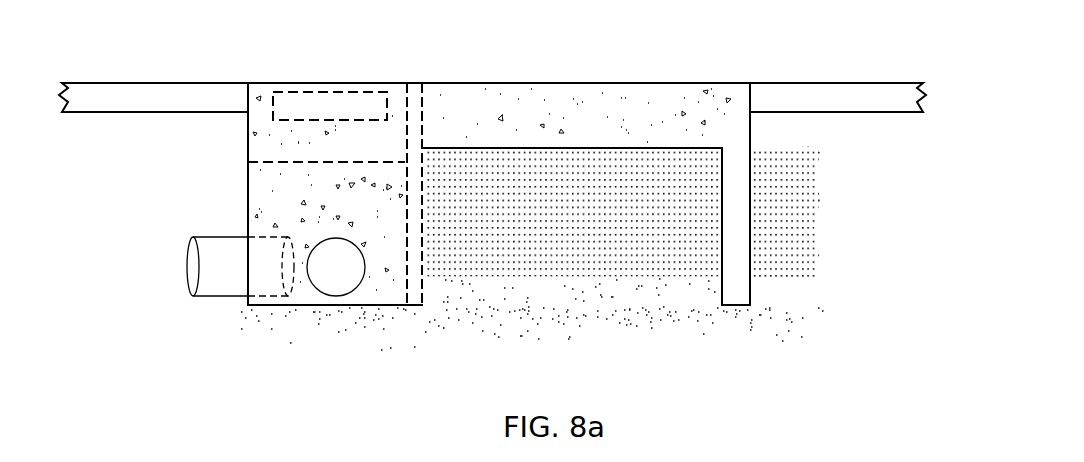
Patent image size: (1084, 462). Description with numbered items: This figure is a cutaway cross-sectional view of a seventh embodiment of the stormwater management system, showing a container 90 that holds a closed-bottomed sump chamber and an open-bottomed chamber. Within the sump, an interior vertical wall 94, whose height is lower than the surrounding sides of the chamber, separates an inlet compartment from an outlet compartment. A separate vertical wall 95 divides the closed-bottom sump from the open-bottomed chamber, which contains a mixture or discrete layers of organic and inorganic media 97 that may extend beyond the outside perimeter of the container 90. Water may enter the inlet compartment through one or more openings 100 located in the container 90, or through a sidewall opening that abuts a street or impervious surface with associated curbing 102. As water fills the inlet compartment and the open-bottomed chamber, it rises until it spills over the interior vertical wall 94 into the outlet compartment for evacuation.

The container 90 is at (468, 194).
The interior vertical wall 94 is at (248, 162).
The separate vertical wall 95 is at (413, 107).
The media 97 is at (597, 215).
The opening 100 is at (323, 107).
The curbing 102 is at (148, 100).